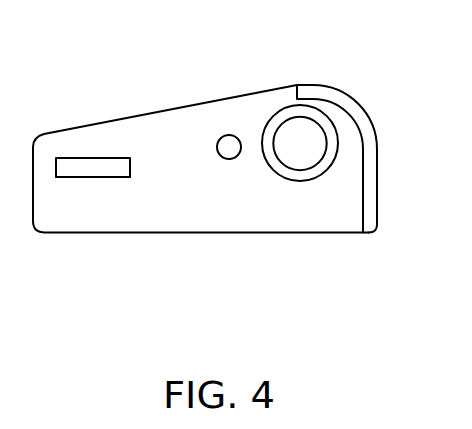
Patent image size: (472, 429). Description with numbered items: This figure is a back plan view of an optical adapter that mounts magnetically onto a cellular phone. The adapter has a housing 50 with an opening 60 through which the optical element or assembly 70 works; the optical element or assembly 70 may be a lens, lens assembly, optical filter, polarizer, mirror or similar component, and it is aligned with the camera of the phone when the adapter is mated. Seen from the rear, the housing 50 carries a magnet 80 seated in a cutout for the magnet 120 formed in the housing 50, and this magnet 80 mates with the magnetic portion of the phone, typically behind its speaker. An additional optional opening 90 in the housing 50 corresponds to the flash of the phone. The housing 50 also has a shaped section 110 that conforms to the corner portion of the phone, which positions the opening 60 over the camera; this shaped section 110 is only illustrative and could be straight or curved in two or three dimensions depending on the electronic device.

The housing 50 is at (268, 86).
The opening 60 is at (298, 170).
The optical element or assembly 70 is at (269, 163).
The magnet 80 is at (89, 157).
The additional optional opening 90 is at (229, 135).
The shaped section 110 is at (348, 107).
The cutout for the magnet 120 is at (80, 177).